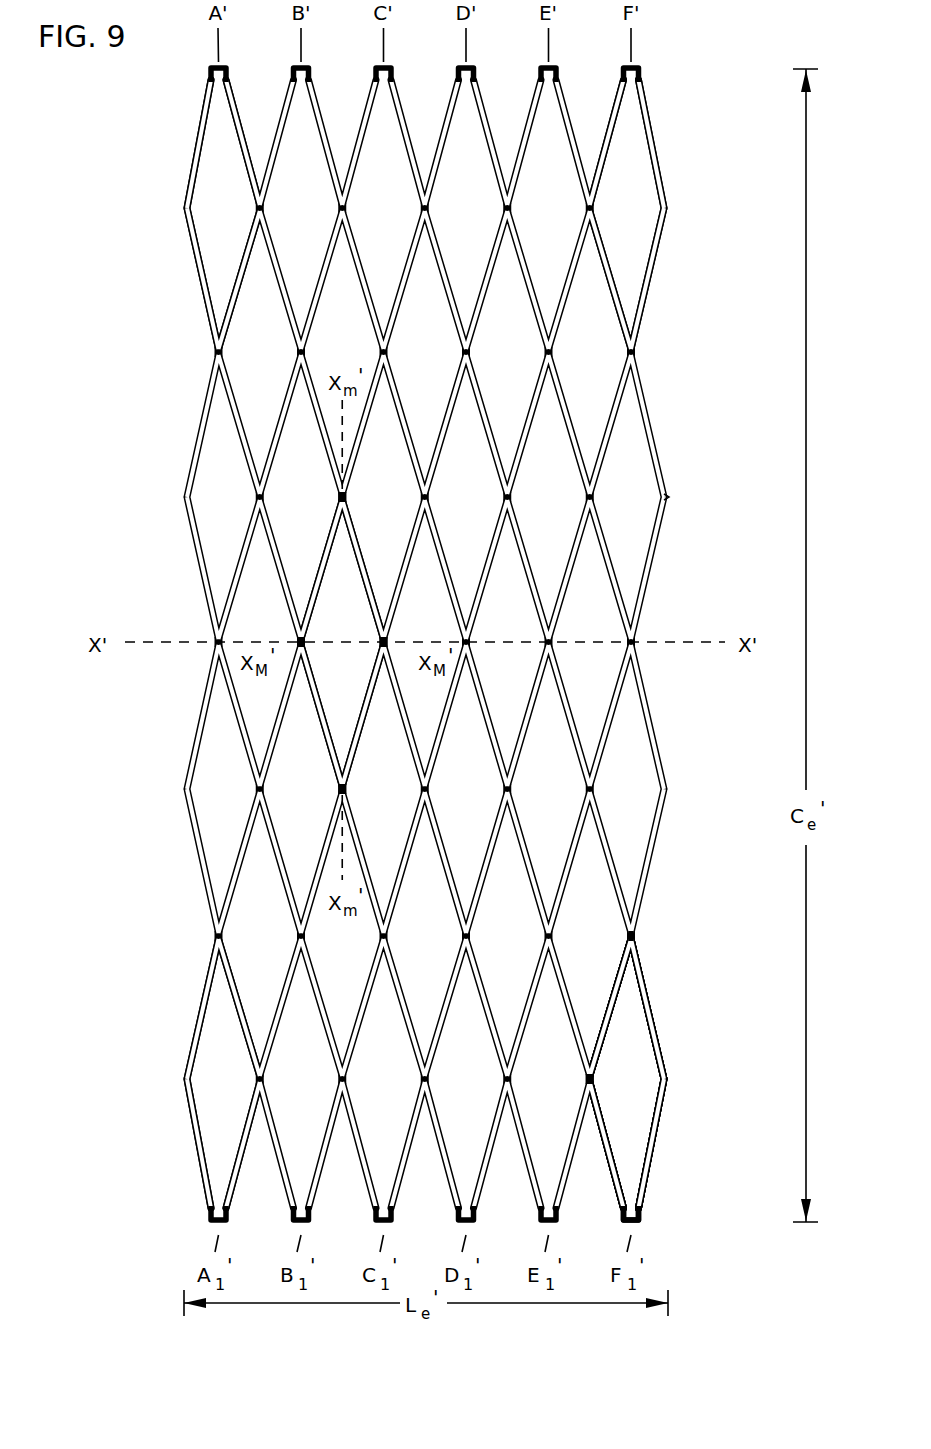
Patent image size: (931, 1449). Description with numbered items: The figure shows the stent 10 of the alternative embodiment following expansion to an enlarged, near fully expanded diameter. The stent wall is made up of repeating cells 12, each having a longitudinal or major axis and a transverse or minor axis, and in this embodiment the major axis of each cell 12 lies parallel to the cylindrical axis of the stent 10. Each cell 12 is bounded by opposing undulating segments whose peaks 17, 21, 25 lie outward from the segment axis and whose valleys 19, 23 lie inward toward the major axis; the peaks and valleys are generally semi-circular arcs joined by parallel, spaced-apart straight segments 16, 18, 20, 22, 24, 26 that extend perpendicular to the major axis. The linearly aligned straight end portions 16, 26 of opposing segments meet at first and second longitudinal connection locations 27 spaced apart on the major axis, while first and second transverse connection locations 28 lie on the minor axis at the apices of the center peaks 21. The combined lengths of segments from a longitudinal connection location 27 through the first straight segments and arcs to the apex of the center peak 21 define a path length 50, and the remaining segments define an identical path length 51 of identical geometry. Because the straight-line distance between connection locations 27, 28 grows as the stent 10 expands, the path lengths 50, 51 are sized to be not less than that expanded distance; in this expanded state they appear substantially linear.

The stent 10 is at (140, 440).
The cell 12 is at (232, 220).
The straight end portion 16 is at (668, 1062).
The peak 17 is at (660, 1033).
The straight segment 18 is at (658, 1012).
The valley 19 is at (652, 988).
The straight segment 20 is at (645, 965).
The center peak 21 is at (636, 946).
The straight segment 22 is at (618, 958).
The valley 23 is at (608, 990).
The straight segment 24 is at (603, 1007).
The peak 25 is at (600, 1037).
The straight end portion 26 is at (602, 1057).
The longitudinal connection location 27 is at (301, 634).
The transverse connection location 28 is at (345, 494).
The path length 50 is at (245, 1038).
The path length 51 is at (188, 1033).